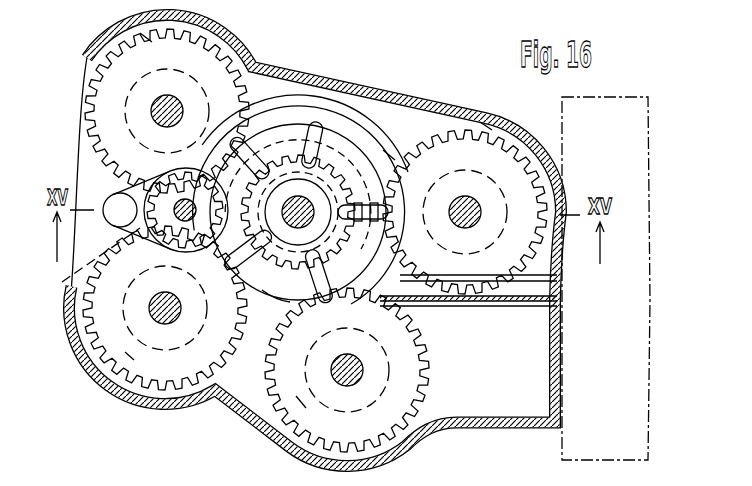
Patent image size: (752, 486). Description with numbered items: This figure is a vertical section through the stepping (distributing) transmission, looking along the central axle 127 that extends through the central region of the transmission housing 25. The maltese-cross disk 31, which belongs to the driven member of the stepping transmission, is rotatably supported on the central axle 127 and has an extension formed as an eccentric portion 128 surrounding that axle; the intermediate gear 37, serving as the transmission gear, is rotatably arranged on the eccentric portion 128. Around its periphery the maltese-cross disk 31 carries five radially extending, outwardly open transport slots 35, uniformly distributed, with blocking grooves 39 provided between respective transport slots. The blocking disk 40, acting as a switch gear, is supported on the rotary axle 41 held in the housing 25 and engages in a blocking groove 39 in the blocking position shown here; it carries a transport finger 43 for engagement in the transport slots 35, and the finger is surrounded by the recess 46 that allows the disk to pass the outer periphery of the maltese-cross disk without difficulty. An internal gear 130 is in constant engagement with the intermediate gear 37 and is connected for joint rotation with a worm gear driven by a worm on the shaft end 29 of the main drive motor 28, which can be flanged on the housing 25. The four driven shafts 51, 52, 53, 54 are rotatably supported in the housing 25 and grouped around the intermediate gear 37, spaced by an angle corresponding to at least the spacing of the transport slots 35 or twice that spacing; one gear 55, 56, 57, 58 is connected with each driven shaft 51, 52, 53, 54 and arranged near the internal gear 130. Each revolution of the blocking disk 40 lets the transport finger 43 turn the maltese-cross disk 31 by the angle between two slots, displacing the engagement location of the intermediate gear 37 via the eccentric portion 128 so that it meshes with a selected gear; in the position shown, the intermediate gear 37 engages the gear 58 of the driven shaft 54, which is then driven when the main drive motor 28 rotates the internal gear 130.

The transmission housing 25 is at (455, 108).
The main drive motor 28 is at (585, 110).
The shaft end 29 is at (525, 292).
The maltese-cross disk 31 is at (345, 150).
The transport slots 35 is at (336, 125).
The intermediate gear 37 is at (370, 145).
The blocking grooves 39 is at (395, 150).
The blocking disk 40 is at (160, 166).
The rotary axle 41 is at (185, 210).
The transport finger 43 is at (112, 205).
The recess 46 is at (90, 264).
The driven shaft 51 is at (478, 204).
The driven shaft 52 is at (363, 372).
The driven shaft 53 is at (160, 313).
The driven shaft 54 is at (153, 107).
The gear 55 is at (487, 121).
The gear 56 is at (302, 402).
The gear 57 is at (130, 357).
The gear 58 is at (150, 42).
The central axle 127 is at (280, 283).
The eccentric portion 128 is at (283, 150).
The internal gear 130 is at (258, 115).